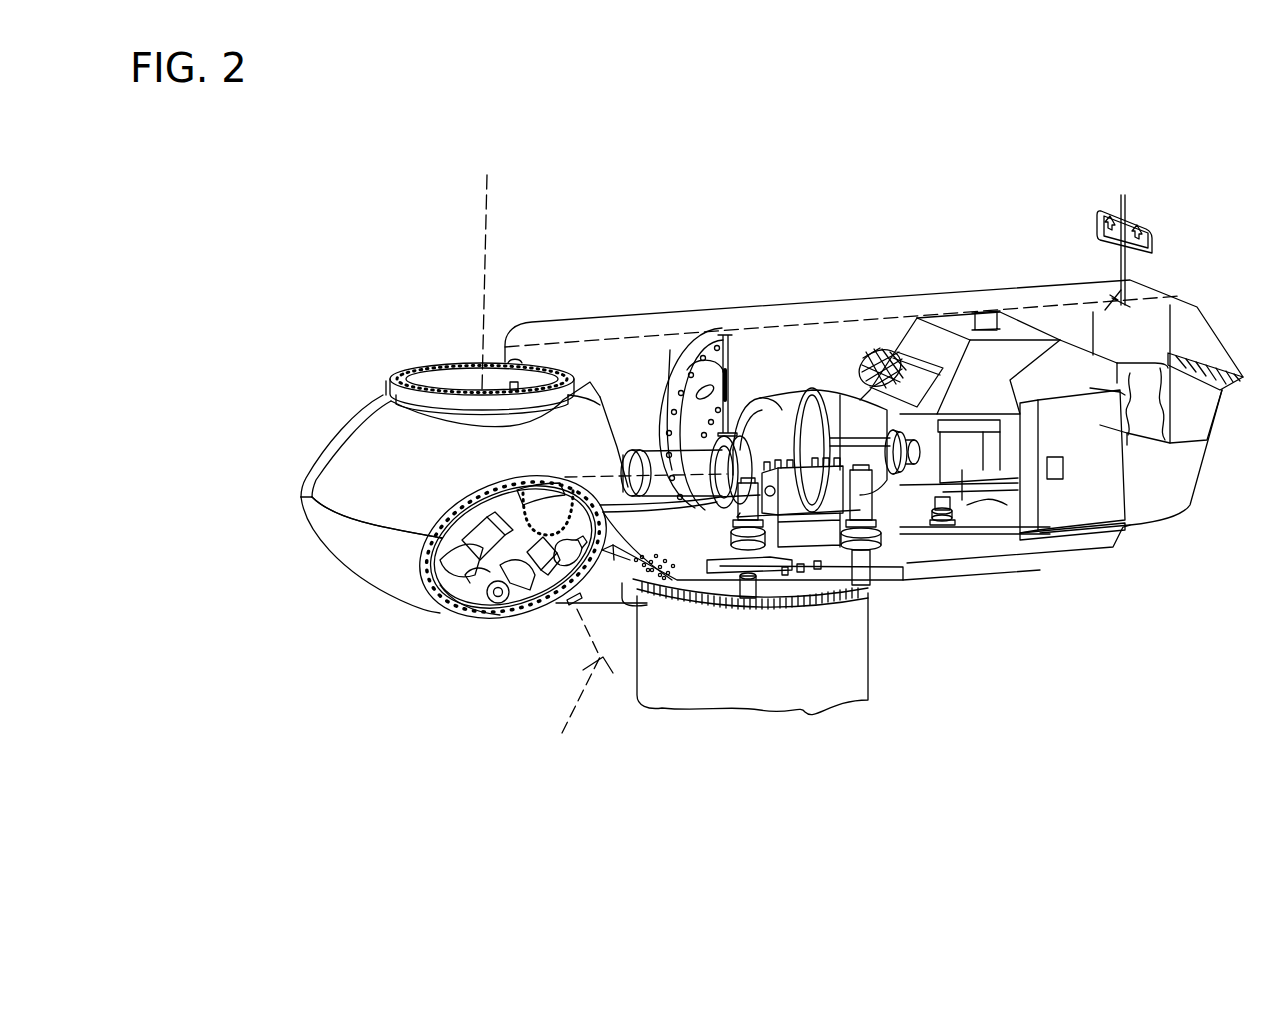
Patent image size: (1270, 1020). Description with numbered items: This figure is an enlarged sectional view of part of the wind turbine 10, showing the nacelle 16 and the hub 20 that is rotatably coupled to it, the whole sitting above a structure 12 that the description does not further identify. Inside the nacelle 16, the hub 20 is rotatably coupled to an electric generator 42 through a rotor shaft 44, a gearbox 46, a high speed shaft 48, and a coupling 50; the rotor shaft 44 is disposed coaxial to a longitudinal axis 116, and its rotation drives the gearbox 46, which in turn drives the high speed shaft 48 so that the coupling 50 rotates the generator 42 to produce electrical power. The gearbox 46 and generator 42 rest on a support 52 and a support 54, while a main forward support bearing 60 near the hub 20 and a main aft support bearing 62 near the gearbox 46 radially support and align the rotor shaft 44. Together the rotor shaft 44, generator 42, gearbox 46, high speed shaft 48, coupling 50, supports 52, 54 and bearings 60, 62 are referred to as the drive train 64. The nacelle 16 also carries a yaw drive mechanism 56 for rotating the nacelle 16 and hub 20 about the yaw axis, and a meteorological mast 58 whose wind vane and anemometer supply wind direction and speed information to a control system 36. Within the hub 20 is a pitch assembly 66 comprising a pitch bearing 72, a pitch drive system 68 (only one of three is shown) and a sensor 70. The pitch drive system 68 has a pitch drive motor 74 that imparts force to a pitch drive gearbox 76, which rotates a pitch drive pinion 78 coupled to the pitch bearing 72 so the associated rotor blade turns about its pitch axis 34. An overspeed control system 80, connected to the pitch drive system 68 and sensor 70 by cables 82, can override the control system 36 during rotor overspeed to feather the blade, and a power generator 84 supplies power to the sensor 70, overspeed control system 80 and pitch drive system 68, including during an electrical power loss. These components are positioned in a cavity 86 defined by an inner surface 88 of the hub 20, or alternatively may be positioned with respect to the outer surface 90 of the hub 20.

The wind turbine 10 is at (315, 238).
The tower 12 is at (800, 712).
The nacelle 16 is at (862, 243).
The hub 20 is at (285, 483).
The pitch axis 34 is at (490, 198).
The control system 36 is at (1065, 420).
The electric generator 42 is at (985, 505).
The rotor shaft 44 is at (625, 485).
The gearbox 46 is at (800, 420).
The high speed shaft 48 is at (917, 540).
The coupling 50 is at (918, 420).
The support 52 is at (843, 590).
The support 54 is at (942, 527).
The yaw drive mechanism 56 is at (746, 605).
The meteorological mast 58 is at (1155, 227).
The main forward support bearing 60 is at (645, 480).
The main aft support bearing 62 is at (767, 408).
The drive train 64 is at (698, 388).
The pitch assembly 66 is at (470, 472).
The pitch drive system 68 is at (440, 571).
The sensor 70 is at (626, 606).
The pitch bearing 72 is at (452, 605).
The pitch drive motor 74 is at (475, 518).
The pitch drive gearbox 76 is at (506, 535).
The pitch drive pinion 78 is at (490, 605).
The overspeed control system 80 is at (545, 590).
The cables 82 is at (572, 495).
The power generator 84 is at (568, 560).
The cavity 86 is at (525, 600).
The inner surface 88 is at (555, 493).
The outer surface 90 is at (430, 538).
The longitudinal axis 116 is at (690, 385).